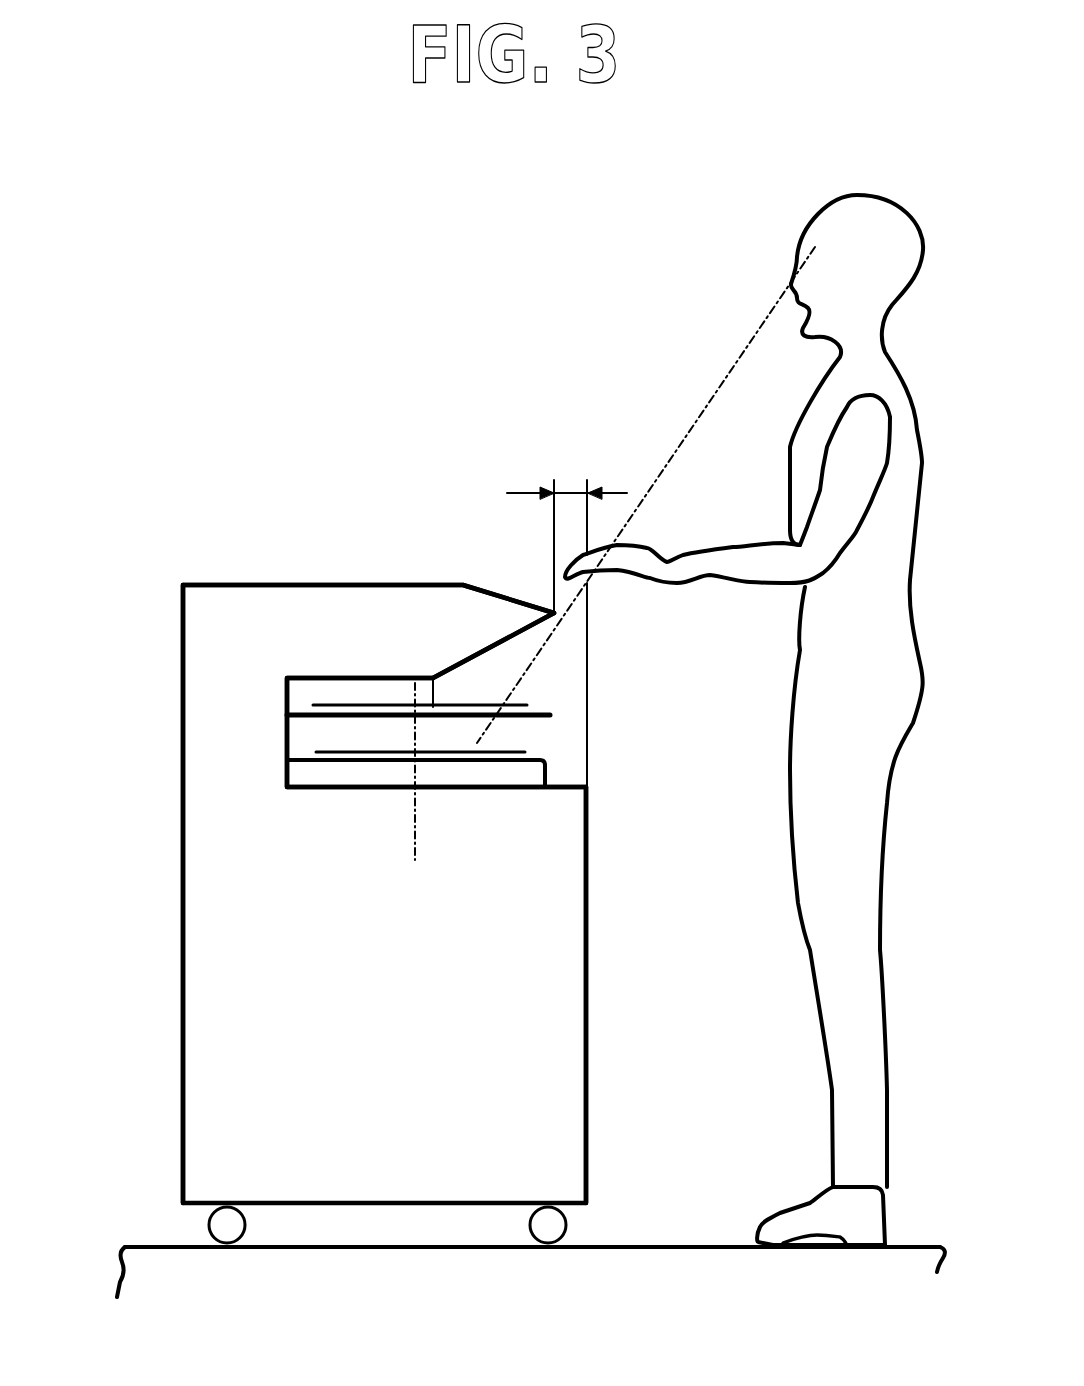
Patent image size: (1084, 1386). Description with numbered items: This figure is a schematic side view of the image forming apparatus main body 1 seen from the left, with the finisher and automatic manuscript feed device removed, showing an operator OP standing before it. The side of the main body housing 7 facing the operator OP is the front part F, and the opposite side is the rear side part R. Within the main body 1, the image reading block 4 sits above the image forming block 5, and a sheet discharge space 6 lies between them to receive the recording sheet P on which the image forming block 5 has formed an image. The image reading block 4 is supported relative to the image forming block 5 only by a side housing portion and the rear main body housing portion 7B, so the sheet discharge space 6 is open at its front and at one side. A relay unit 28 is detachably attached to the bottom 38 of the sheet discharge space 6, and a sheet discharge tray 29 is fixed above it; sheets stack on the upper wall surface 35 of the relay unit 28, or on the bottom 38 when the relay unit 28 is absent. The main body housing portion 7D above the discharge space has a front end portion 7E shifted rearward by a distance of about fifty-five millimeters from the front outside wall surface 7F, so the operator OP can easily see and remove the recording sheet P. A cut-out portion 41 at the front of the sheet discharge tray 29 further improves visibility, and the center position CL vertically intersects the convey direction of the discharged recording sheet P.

The image forming apparatus main body 1 is at (160, 697).
The image reading block 4 is at (220, 630).
The image forming block 5 is at (290, 832).
The sheet discharge space 6 is at (357, 731).
The main body housing 7 is at (183, 830).
The main body housing portion at the rear side 7B is at (220, 763).
The main body housing portion 7D is at (508, 617).
The front end portion 7E is at (588, 595).
The front outside wall surface 7F is at (587, 892).
The relay unit 28 is at (562, 772).
The sheet discharge tray 29 is at (303, 705).
The upper wall surface 35 is at (543, 755).
The bottom of the sheet discharge space 38 is at (522, 782).
The cut-out portion 41 is at (545, 705).
The recording sheet P is at (437, 678).
The center position CL is at (417, 793).
The front part F is at (353, 752).
The rear side part R is at (183, 945).
The operator OP is at (790, 800).